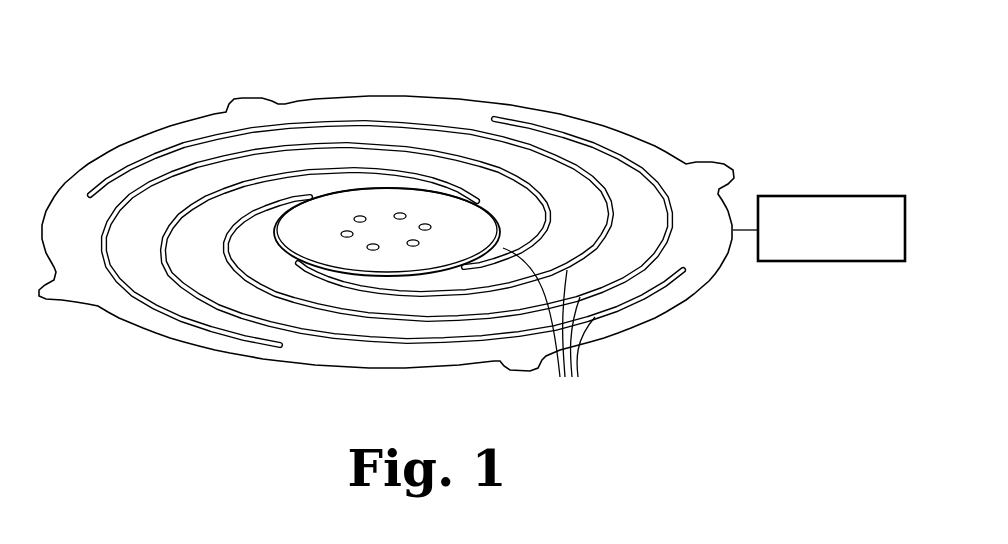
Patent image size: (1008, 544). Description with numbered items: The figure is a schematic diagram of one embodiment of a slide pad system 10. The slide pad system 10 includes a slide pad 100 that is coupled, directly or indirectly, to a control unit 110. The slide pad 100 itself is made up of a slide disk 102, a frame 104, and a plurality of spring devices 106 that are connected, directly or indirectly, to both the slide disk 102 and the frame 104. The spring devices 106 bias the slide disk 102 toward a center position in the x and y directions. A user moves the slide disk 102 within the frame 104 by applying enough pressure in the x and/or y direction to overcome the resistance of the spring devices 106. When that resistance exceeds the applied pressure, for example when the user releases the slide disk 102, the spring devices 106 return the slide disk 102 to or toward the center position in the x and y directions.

The slide pad system 10 is at (472, 231).
The slide pad 100 is at (150, 367).
The slide disk 102 is at (433, 217).
The frame 104 is at (670, 168).
The spring devices 106 is at (552, 329).
The control unit 110 is at (826, 262).